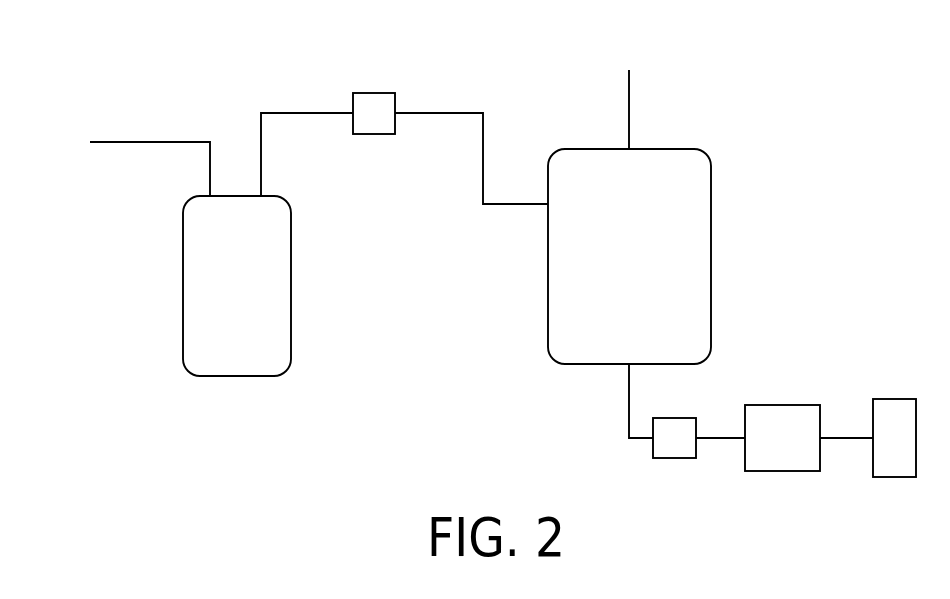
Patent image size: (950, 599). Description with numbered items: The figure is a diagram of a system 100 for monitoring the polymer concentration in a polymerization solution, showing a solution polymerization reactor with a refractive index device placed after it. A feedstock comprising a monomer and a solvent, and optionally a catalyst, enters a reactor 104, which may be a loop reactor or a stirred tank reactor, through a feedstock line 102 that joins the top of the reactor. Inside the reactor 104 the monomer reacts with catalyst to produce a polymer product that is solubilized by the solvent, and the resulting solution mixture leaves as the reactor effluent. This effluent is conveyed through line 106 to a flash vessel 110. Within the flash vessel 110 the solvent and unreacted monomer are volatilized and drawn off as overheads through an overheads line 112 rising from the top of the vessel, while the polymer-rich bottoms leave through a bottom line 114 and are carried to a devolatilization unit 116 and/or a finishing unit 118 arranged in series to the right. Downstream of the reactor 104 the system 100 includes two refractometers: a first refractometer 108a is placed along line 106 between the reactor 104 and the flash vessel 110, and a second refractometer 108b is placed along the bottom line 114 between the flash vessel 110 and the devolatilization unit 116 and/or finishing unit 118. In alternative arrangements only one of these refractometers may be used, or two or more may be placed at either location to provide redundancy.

The system 100 is at (118, 50).
The feedstock line 102 is at (134, 140).
The reactor 104 is at (220, 293).
The line 106 is at (288, 110).
The first refractometer 108a is at (372, 92).
The flash vessel 110 is at (613, 277).
The overheads line 112 is at (633, 108).
The bottom line 114 is at (628, 403).
The second refractometer 108b is at (675, 460).
The devolatilization unit 116 is at (781, 404).
The finishing unit 118 is at (893, 398).